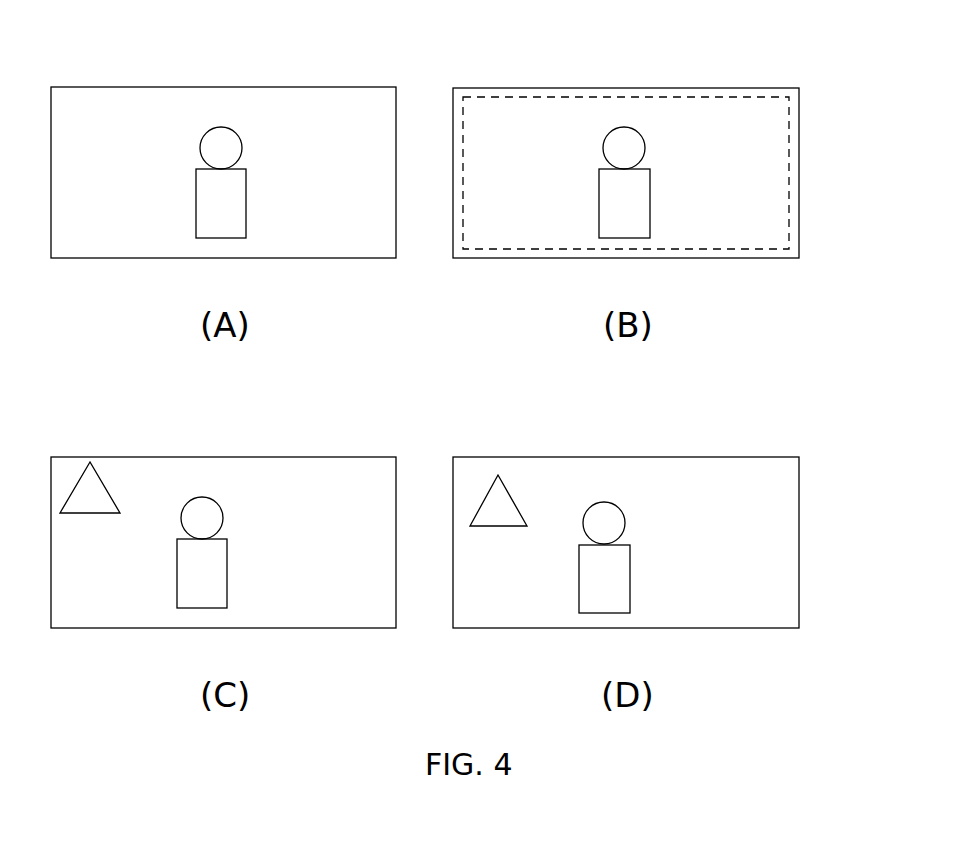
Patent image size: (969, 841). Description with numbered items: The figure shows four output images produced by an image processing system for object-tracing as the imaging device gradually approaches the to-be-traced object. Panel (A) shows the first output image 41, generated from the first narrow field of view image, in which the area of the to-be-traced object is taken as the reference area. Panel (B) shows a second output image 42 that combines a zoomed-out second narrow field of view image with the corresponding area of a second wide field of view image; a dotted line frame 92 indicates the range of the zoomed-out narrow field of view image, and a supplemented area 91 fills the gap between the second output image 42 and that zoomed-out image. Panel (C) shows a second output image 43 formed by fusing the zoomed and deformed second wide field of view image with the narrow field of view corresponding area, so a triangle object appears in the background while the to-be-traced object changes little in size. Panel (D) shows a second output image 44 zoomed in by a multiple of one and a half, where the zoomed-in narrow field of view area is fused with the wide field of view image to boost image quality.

The first output image 41 is at (318, 260).
The second output image 42 is at (669, 215).
The second output image 43 is at (318, 630).
The second output image 44 is at (718, 630).
The supplemented area 91 is at (799, 190).
The dotted line frame 92 is at (789, 127).